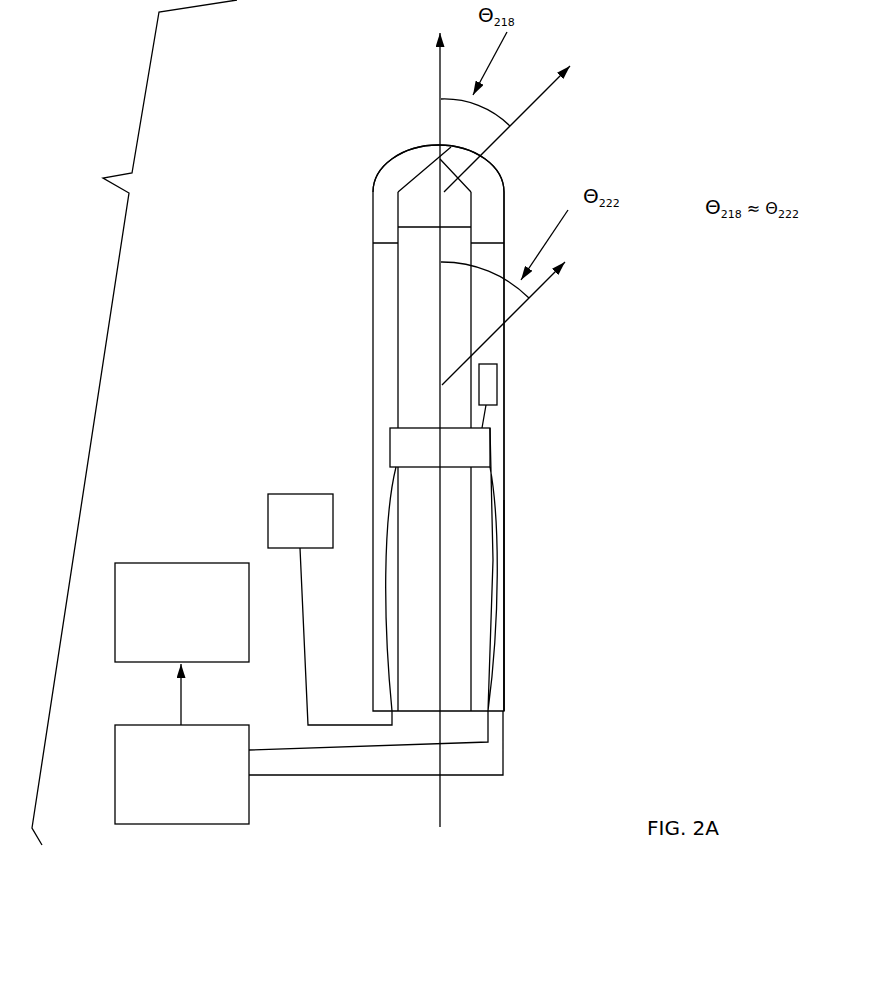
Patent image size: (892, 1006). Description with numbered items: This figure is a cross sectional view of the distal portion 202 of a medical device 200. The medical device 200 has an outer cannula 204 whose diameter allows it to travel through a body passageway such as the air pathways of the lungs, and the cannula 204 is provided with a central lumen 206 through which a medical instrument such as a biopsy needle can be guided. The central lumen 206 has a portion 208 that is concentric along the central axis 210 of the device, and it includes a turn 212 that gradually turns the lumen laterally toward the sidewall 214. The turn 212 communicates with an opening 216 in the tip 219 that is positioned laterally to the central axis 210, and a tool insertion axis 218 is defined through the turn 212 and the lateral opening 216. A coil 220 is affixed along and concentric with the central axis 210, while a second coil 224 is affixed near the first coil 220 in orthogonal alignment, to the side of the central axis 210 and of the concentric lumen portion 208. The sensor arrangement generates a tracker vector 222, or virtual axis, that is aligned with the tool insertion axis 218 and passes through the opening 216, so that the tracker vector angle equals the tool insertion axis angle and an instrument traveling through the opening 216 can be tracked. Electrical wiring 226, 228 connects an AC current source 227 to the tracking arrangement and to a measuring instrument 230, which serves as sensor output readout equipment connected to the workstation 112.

The medical device 200 is at (134, 422).
The distal portion 202 is at (337, 282).
The outer cannula 204 is at (511, 580).
The central lumen 206 is at (475, 645).
The portion of the central lumen 208 is at (396, 355).
The central axis 210 is at (438, 67).
The turn 212 is at (412, 182).
The sidewall 214 is at (521, 540).
The opening 216 is at (498, 172).
The tool insertion axis 218 is at (572, 86).
The tip 219 is at (417, 147).
The coil 220 is at (389, 447).
The tracker vector 222 is at (557, 302).
The second coil 224 is at (503, 388).
The electrical wiring 226 is at (307, 679).
The AC current source 227 is at (300, 521).
The electrical wiring 228 is at (494, 420).
The measuring instrument 230 is at (182, 744).
The workstation 112 is at (182, 612).